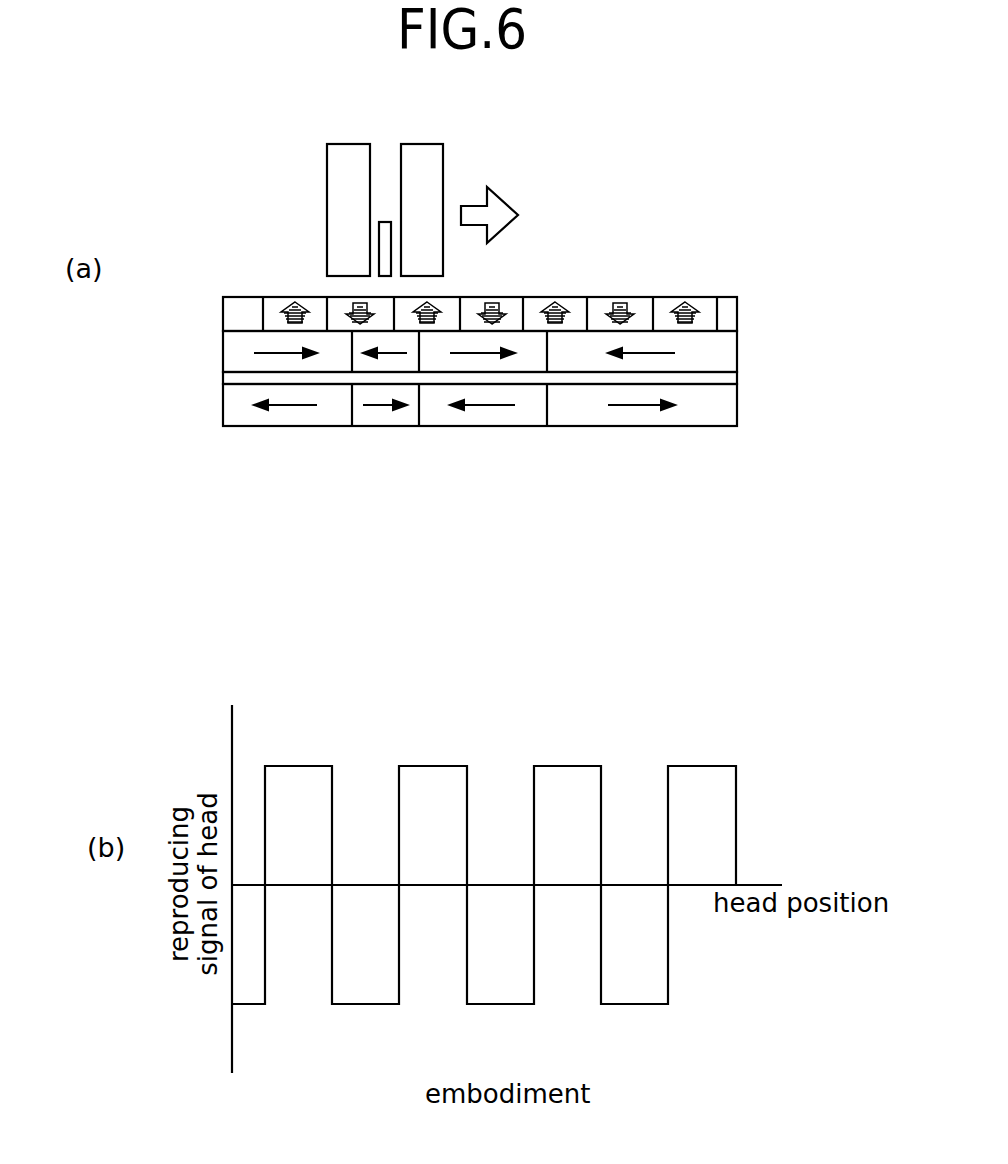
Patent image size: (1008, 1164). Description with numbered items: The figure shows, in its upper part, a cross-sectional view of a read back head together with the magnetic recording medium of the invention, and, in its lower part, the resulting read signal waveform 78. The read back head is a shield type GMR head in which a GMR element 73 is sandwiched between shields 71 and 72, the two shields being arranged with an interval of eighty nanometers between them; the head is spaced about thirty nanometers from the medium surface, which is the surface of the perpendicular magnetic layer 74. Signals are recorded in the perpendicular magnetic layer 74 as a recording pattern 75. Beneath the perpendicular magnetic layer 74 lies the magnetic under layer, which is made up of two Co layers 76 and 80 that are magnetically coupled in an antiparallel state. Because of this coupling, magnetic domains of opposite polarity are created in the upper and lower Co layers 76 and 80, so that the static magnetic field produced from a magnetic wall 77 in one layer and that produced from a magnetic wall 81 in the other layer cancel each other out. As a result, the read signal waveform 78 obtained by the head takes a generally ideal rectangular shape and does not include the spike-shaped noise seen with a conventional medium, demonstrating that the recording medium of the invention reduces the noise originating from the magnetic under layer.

The shield 71 is at (432, 157).
The shield 72 is at (340, 172).
The GMR element 73 is at (385, 246).
The perpendicular magnetic layer 74 is at (232, 318).
The recording pattern 75 is at (685, 300).
The Co layer of magnetic under layer 76 is at (232, 357).
The magnetic wall 77 is at (355, 378).
The read signal waveform 78 is at (303, 755).
The Co layer of magnetic under layer 80 is at (232, 408).
The magnetic wall 81 is at (352, 426).